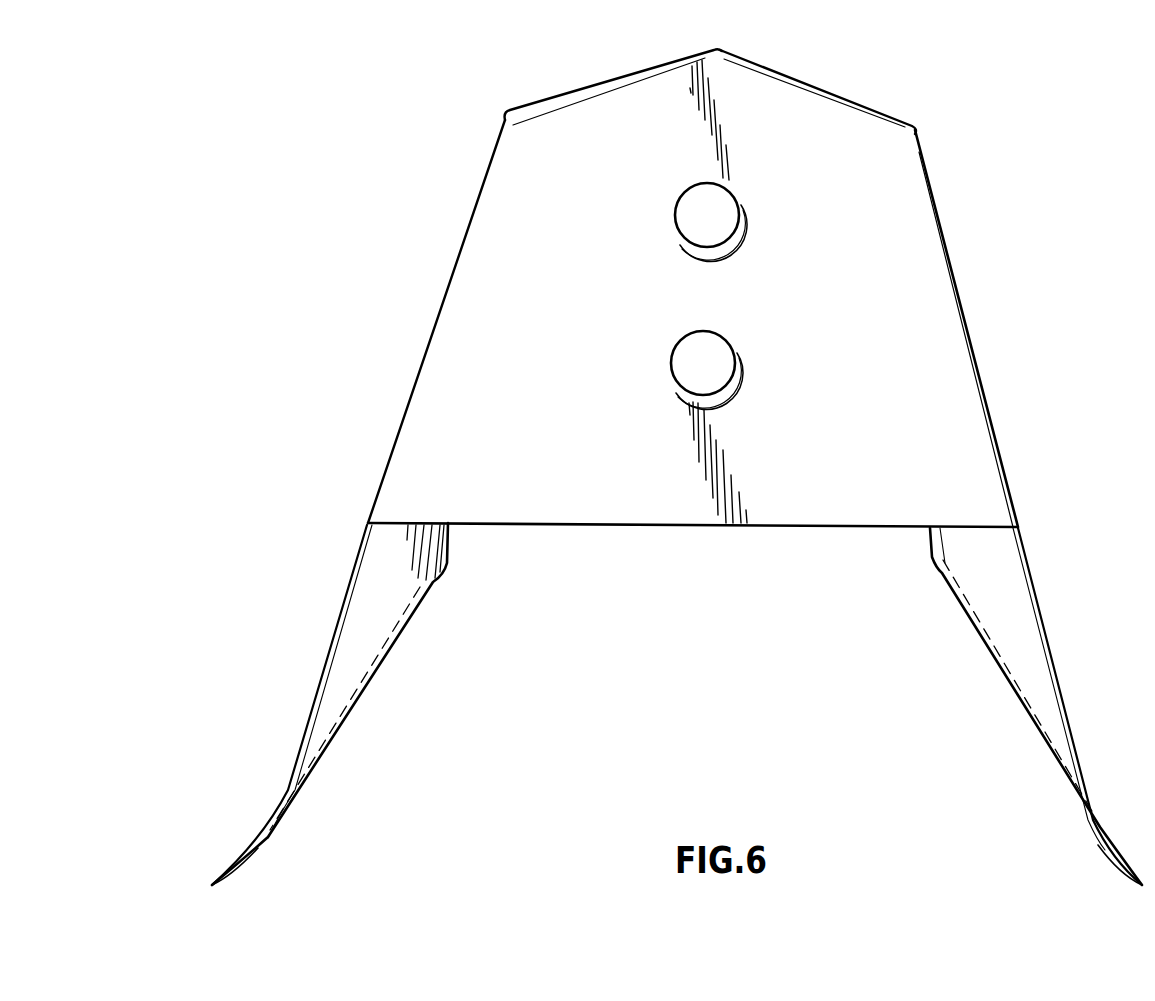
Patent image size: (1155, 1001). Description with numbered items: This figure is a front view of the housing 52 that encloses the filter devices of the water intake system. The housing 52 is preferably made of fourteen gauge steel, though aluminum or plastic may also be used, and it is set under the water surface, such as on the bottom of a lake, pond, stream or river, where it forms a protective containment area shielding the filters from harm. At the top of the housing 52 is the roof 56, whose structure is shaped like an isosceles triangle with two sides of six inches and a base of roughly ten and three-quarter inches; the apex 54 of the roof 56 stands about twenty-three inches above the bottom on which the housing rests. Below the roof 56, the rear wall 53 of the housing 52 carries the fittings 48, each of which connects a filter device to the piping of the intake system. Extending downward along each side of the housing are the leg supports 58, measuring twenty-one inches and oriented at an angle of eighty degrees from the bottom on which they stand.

The housing 52 is at (838, 157).
The apex 54 is at (718, 52).
The roof 56 is at (805, 80).
The rear wall 53 is at (928, 357).
The fitting 48 is at (742, 232).
The leg supports 58 is at (345, 640).